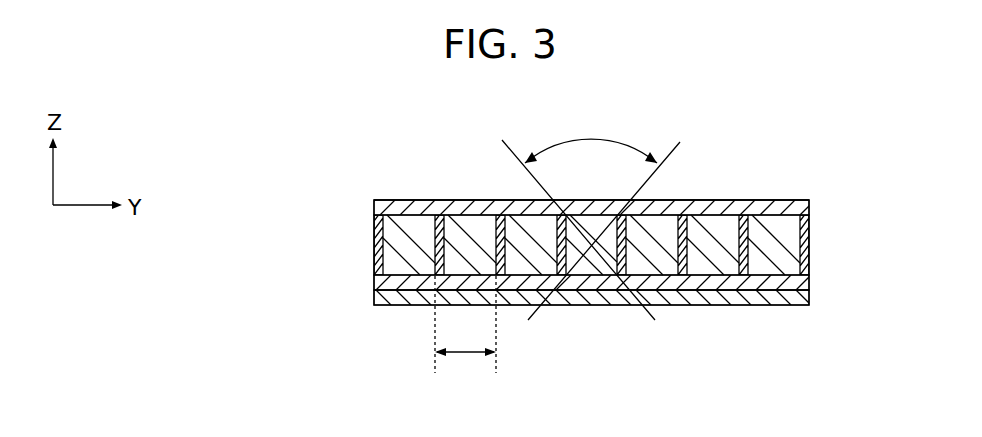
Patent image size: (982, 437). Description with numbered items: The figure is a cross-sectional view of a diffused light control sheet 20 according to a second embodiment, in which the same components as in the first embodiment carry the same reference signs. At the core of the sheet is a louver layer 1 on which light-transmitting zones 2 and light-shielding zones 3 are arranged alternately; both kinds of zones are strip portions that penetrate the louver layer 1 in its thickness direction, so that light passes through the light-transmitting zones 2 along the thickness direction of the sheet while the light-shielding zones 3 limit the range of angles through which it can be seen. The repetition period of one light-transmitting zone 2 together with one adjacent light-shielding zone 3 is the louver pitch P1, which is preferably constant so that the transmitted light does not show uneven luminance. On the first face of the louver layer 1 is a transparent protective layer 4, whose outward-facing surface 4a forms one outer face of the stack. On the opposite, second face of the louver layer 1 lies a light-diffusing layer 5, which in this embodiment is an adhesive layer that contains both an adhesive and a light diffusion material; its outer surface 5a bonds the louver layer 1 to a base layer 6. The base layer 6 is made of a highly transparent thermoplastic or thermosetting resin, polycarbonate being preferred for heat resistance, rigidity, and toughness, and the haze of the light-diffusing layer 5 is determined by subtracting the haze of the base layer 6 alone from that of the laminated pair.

The louver layer 1 is at (522, 249).
The light-transmitting zone 2 is at (374, 244).
The light-shielding zone 3 is at (374, 267).
The transparent protective layer 4 is at (374, 211).
The surface of transparent protective layer 4a is at (758, 200).
The light-diffusing layer 5 is at (374, 283).
The outer surface of light-diffusing layer 5a is at (767, 292).
The base layer 6 is at (374, 300).
The diffused light control sheet 20 is at (718, 175).
The louver pitch P1 is at (465, 331).